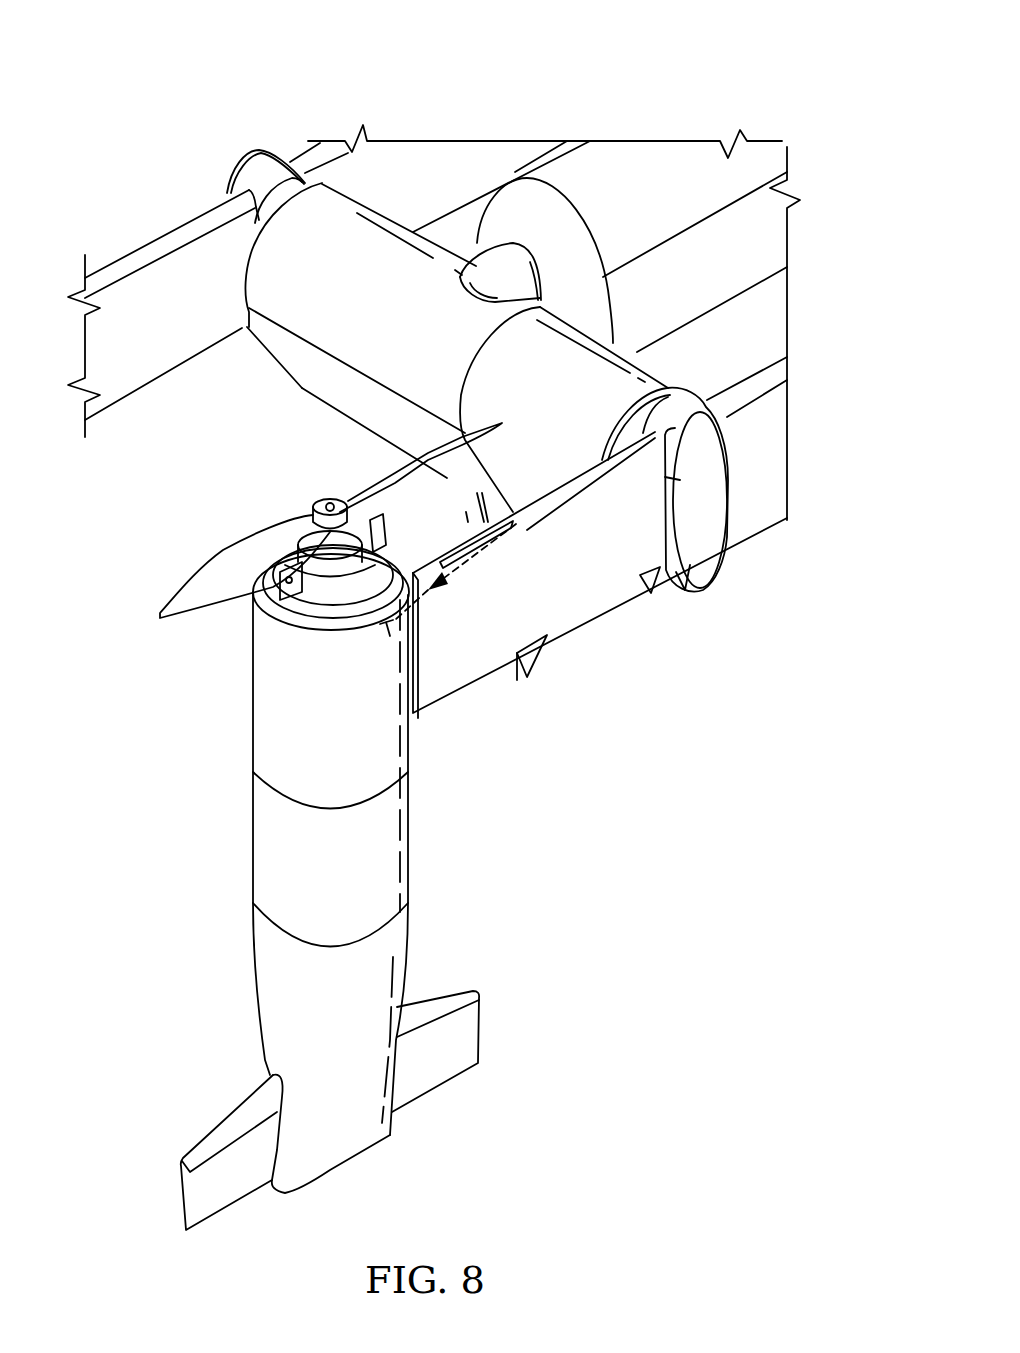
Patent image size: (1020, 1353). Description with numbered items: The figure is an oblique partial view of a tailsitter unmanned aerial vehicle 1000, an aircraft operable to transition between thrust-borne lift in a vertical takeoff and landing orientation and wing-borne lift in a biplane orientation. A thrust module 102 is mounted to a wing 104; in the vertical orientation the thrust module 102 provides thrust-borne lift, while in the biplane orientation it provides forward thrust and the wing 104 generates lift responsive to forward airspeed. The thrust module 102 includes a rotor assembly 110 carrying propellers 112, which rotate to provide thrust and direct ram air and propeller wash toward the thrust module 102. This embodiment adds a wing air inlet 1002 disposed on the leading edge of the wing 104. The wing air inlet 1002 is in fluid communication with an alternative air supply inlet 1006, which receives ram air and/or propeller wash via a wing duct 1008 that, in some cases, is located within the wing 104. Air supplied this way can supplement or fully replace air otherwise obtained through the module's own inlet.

The tailsitter unmanned aerial vehicle 1000 is at (230, 70).
The thrust module 102 is at (243, 690).
The wing 104 is at (578, 600).
The rotor assembly 110 is at (302, 477).
The propeller 112 is at (378, 483).
The wing air inlet 1002 is at (507, 534).
The alternative air supply inlet 1006 is at (386, 632).
The wing duct 1008 is at (456, 584).